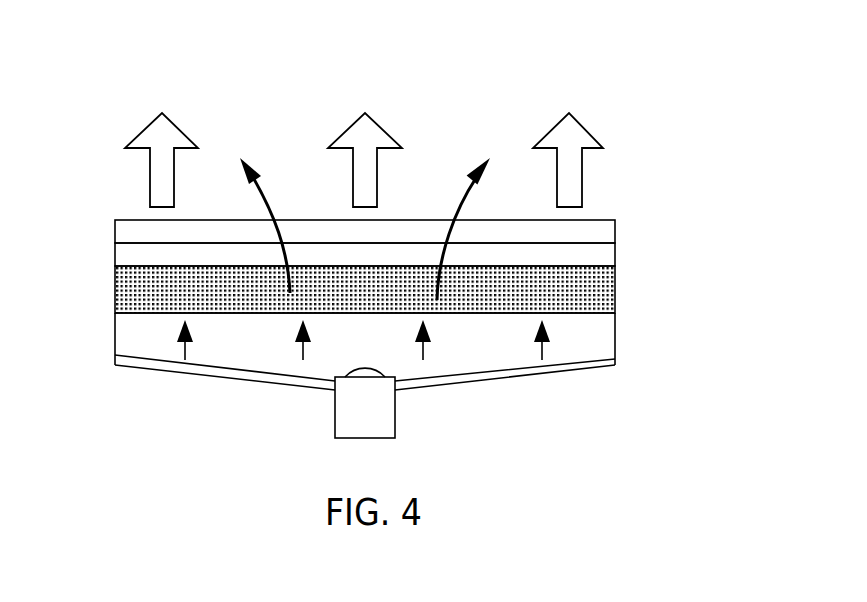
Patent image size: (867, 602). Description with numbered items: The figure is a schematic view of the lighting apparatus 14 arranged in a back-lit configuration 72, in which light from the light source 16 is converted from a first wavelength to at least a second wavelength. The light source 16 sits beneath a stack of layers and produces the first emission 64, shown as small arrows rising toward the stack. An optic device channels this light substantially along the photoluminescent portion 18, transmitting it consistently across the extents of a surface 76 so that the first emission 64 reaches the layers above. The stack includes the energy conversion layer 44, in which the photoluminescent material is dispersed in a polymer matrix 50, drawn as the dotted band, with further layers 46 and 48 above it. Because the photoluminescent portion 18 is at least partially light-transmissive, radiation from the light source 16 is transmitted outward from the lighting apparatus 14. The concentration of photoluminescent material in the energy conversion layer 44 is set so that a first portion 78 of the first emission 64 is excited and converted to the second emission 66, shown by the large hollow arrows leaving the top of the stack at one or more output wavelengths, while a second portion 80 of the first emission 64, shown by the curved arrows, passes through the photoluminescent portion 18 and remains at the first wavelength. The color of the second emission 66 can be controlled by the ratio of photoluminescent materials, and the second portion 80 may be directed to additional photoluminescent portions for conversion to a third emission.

The back-lit configuration 72 is at (393, 228).
The lighting apparatus 14 is at (652, 71).
The photoluminescent portion 18 is at (613, 189).
The top layer 48 is at (607, 232).
The intermediate layer 46 is at (610, 253).
The energy conversion layer 44 is at (427, 298).
The polymer matrix 50 is at (610, 288).
The surface of the optic device 76 is at (162, 310).
The light source 16 is at (377, 418).
The first emission 64 is at (300, 348).
The second portion of the first emission 80 is at (263, 192).
The first portion of the first emission 78 is at (325, 125).
The second emission 66 is at (143, 160).